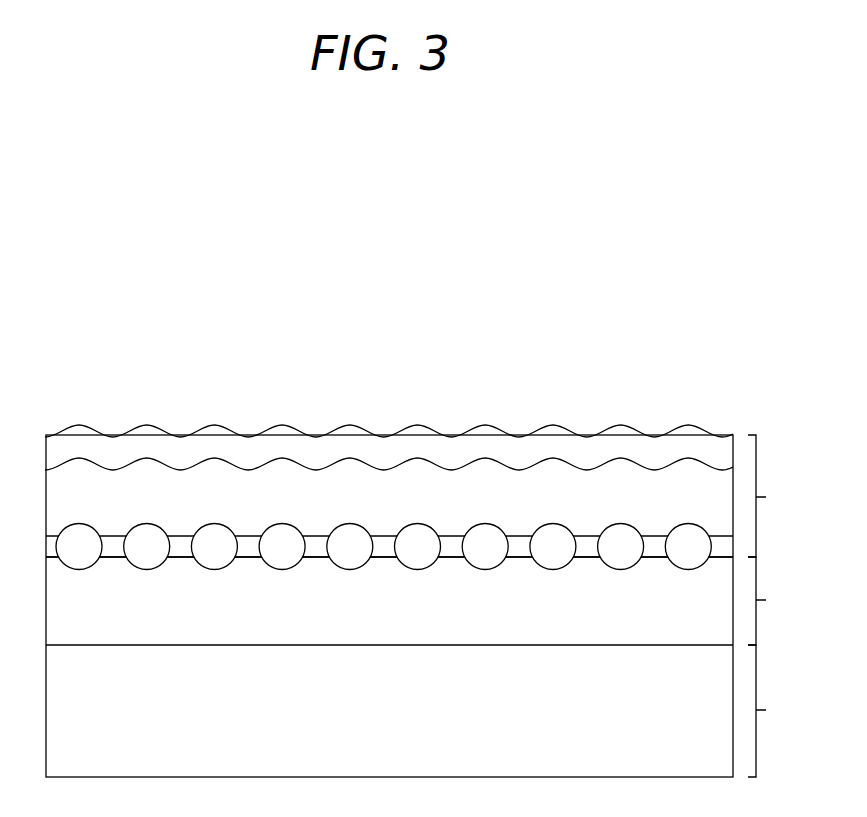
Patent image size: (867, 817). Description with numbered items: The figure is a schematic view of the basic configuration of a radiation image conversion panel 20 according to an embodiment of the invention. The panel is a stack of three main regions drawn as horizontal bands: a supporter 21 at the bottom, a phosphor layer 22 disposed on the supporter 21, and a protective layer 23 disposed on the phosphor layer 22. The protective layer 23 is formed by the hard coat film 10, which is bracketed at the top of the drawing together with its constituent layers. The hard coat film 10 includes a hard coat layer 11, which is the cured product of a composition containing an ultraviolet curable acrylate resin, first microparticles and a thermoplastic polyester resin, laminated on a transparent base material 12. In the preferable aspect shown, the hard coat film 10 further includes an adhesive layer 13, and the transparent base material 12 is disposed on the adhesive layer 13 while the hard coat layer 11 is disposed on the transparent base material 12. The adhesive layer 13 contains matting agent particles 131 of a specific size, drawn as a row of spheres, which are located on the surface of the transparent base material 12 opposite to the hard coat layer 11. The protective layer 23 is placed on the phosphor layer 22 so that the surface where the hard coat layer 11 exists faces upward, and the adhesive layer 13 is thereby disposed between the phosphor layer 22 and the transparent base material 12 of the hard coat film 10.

The radiation image conversion panel 20 is at (362, 383).
The hard coat film 10 is at (545, 302).
The hard coat layer 11 is at (498, 438).
The transparent base material 12 is at (560, 483).
The adhesive layer 13 is at (654, 536).
The matting agent particles 131 is at (688, 537).
The supporter 21 is at (431, 711).
The phosphor layer 22 is at (431, 601).
The protective layer 23 is at (782, 496).